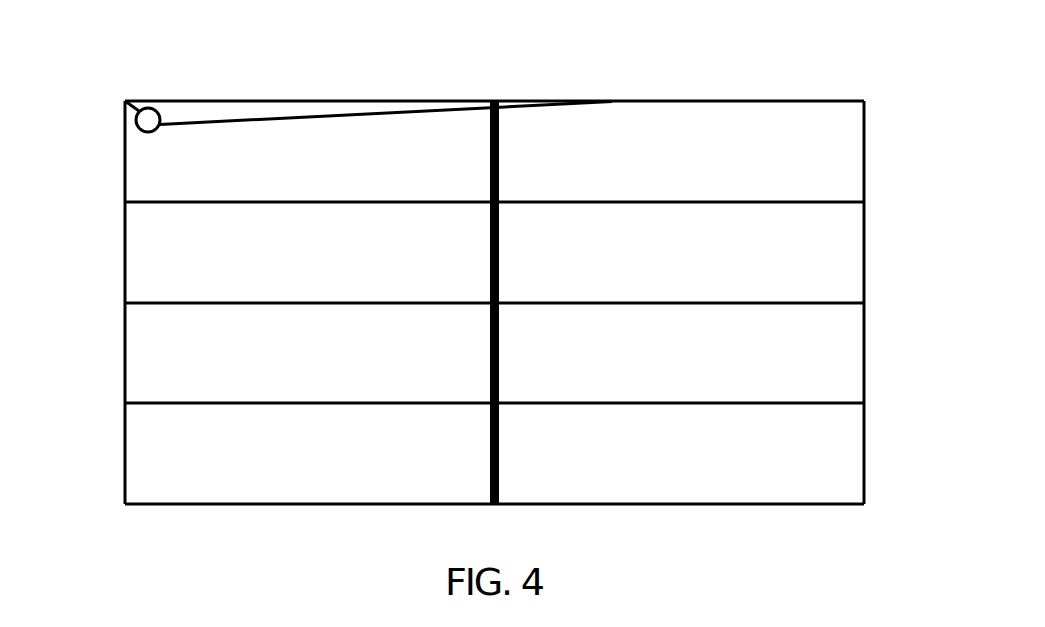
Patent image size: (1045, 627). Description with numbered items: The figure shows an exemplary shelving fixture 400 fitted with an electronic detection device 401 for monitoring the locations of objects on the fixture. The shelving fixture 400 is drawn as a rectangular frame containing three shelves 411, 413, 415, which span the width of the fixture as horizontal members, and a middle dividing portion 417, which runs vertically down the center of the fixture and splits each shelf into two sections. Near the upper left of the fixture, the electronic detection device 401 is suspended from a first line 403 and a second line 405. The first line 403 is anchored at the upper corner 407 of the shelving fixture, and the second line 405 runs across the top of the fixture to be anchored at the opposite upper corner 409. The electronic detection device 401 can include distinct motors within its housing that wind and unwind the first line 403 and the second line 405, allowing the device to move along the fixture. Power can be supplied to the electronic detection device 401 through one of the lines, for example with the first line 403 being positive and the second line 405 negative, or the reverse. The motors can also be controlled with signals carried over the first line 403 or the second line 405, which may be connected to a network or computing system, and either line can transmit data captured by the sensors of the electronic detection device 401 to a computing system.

The shelving fixture 400 is at (489, 265).
The electronic detection device 401 is at (154, 134).
The first line 403 is at (121, 113).
The second line 405 is at (265, 116).
The upper corner 407 is at (121, 98).
The upper corner 409 is at (867, 98).
The shelf 411 is at (121, 199).
The shelf 413 is at (121, 300).
The shelf 415 is at (121, 400).
The middle dividing portion 417 is at (503, 252).